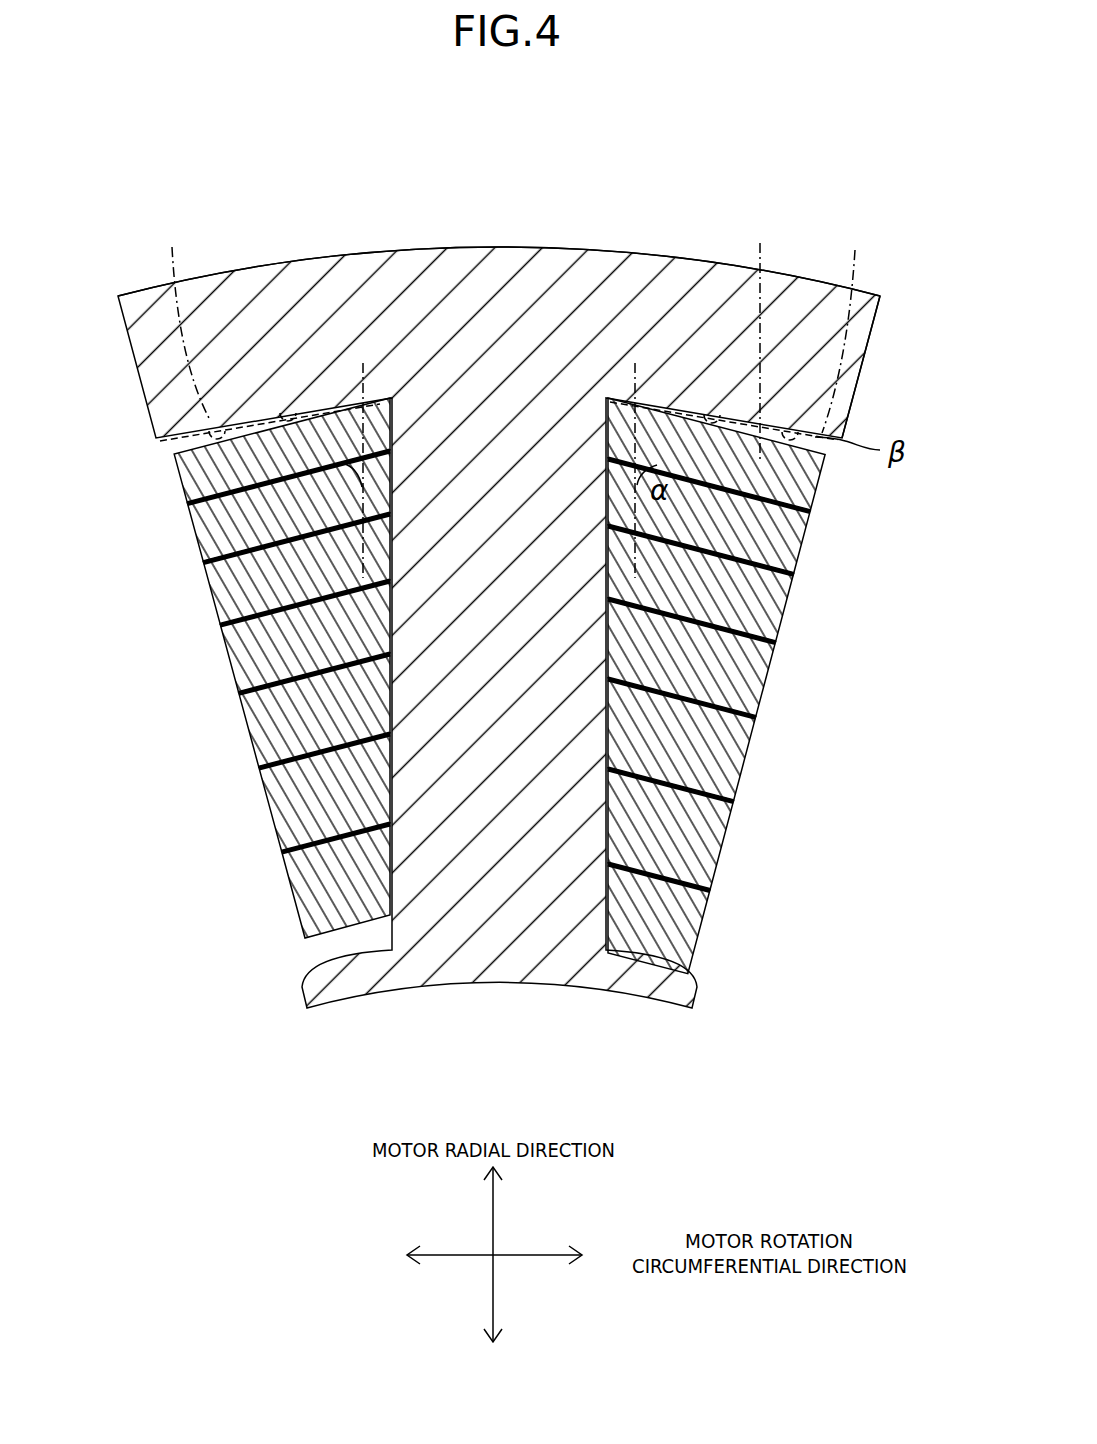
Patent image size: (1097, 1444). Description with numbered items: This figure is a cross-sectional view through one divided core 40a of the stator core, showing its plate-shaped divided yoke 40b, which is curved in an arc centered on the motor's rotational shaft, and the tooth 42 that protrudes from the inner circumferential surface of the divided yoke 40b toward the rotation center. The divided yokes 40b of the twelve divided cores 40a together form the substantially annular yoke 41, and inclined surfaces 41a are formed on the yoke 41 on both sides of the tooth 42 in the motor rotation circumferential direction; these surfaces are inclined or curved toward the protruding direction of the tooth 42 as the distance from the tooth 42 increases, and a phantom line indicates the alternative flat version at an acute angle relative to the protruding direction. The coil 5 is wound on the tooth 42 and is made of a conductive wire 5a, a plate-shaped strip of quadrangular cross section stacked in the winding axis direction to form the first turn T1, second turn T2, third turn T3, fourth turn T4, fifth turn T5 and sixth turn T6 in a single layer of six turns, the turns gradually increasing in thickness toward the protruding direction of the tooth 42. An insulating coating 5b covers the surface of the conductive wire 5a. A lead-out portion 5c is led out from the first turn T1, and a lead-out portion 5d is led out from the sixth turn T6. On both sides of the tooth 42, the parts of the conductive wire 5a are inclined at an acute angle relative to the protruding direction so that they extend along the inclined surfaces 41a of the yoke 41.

The coil 5 is at (239, 678).
The conductive wire 5a is at (305, 897).
The insulating coating 5b is at (298, 872).
The lead-out portion 5c is at (700, 930).
The lead-out portion 5d is at (183, 487).
The divided core 40a is at (790, 276).
The divided yoke 40b is at (460, 246).
The yoke 41 is at (636, 251).
The inclined surface 41a is at (718, 410).
The tooth 42 is at (322, 952).
The first turn T1 is at (722, 852).
The second turn T2 is at (740, 762).
The third turn T3 is at (760, 680).
The fourth turn T4 is at (775, 607).
The fifth turn T5 is at (785, 540).
The sixth turn T6 is at (805, 483).